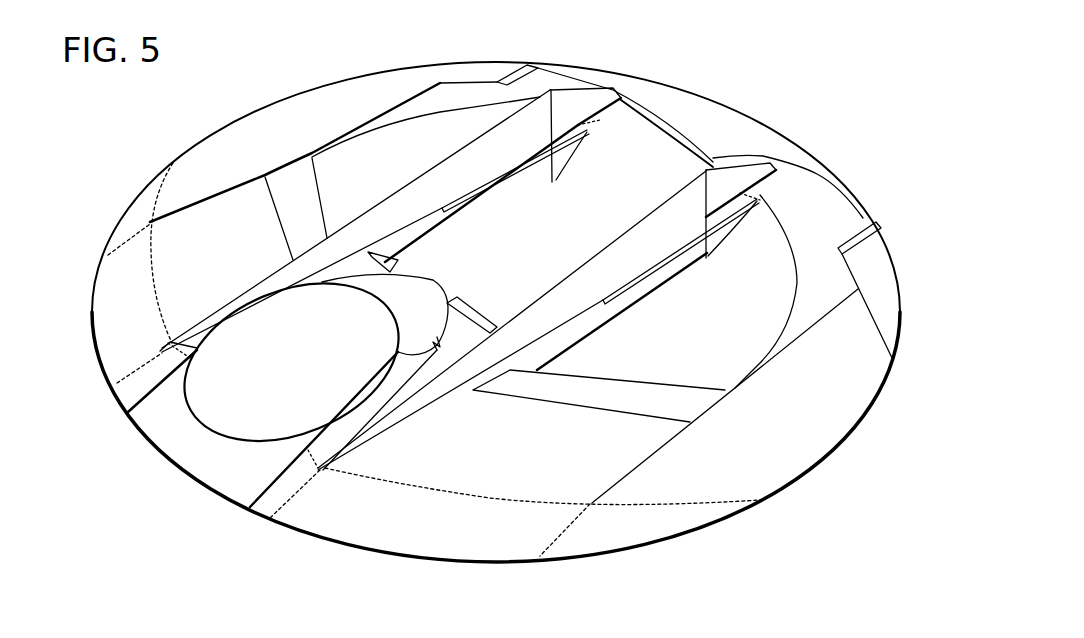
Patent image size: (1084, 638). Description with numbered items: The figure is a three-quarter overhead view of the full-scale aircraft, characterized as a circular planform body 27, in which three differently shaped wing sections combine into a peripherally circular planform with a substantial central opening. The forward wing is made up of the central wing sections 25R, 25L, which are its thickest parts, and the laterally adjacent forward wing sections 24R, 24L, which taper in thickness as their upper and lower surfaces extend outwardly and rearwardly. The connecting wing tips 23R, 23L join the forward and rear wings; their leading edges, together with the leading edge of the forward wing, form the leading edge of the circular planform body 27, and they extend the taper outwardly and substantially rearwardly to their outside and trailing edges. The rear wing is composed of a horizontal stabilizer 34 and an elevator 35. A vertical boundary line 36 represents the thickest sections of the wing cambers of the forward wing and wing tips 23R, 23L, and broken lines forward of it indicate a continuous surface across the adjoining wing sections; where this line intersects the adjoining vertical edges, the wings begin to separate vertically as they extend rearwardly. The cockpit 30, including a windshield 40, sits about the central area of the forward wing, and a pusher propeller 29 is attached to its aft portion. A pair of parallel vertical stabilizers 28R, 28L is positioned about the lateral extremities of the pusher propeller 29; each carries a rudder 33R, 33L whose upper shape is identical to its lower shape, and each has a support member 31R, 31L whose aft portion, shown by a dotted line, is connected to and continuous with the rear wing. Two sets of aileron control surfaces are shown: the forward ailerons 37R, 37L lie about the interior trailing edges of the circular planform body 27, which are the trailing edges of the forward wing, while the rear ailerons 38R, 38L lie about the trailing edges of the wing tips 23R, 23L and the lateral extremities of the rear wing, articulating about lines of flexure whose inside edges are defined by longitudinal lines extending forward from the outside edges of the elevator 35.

The circular planform body 27 is at (802, 77).
The wing tip 23R is at (278, 110).
The wing tip 23L is at (615, 530).
The forward wing section 24R is at (115, 345).
The forward wing section 24L is at (393, 537).
The central wing section 25R is at (130, 390).
The central wing section 25L is at (267, 502).
The vertical stabilizer 28R is at (468, 213).
The vertical stabilizer 28L is at (633, 295).
The pusher propeller 29 is at (455, 312).
The cockpit 30 is at (212, 467).
The support member 31R is at (527, 162).
The support member 31L is at (673, 257).
The rudder 33R is at (580, 97).
The rudder 33L is at (742, 168).
The horizontal stabilizer 34 is at (822, 214).
The elevator 35 is at (690, 107).
The vertical boundary line 36 is at (158, 203).
The forward aileron 37R is at (298, 213).
The forward aileron 37L is at (573, 383).
The rear aileron 38R is at (485, 70).
The rear aileron 38L is at (865, 268).
The windshield 40 is at (203, 397).